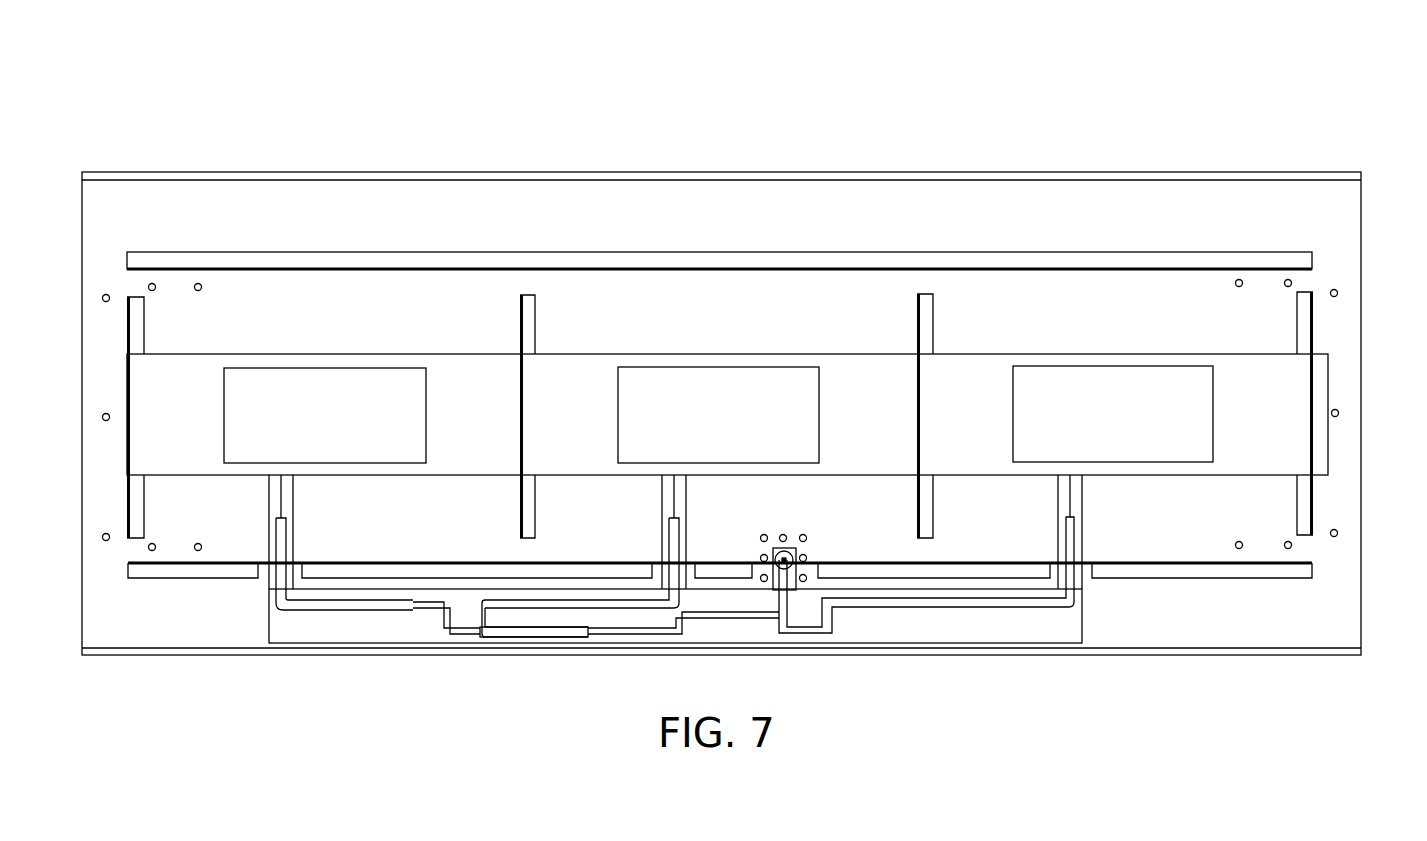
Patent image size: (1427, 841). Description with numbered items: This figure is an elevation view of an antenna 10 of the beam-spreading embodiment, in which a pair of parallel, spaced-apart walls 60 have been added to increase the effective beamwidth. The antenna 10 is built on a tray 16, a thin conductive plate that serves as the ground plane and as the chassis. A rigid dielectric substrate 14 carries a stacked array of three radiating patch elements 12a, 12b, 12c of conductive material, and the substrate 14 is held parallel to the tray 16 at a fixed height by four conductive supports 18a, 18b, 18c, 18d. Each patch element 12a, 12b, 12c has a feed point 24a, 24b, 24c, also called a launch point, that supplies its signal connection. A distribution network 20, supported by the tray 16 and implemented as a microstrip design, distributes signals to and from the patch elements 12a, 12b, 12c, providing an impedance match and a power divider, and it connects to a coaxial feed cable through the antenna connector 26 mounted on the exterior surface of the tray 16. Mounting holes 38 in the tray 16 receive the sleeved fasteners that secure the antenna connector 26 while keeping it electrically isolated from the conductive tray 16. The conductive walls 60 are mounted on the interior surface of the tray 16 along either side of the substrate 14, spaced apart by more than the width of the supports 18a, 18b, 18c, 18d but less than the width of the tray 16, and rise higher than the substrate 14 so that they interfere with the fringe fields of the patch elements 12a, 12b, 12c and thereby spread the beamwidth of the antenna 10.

The antenna 10 is at (1196, 130).
The tray 16 is at (1358, 202).
The walls 60 is at (637, 258).
The substrate 14 is at (1323, 387).
The support 18d is at (127, 297).
The support 18c is at (518, 295).
The support 18b is at (915, 293).
The support 18a is at (1295, 292).
The feed point 24c is at (278, 417).
The feed point 24b is at (673, 415).
The feed point 24a is at (1068, 413).
The patch element 12c is at (413, 423).
The patch element 12b is at (807, 423).
The patch element 12a is at (1207, 417).
The distribution network 20 is at (1068, 602).
The antenna connector 26 is at (807, 540).
The mounting holes 38 is at (763, 535).